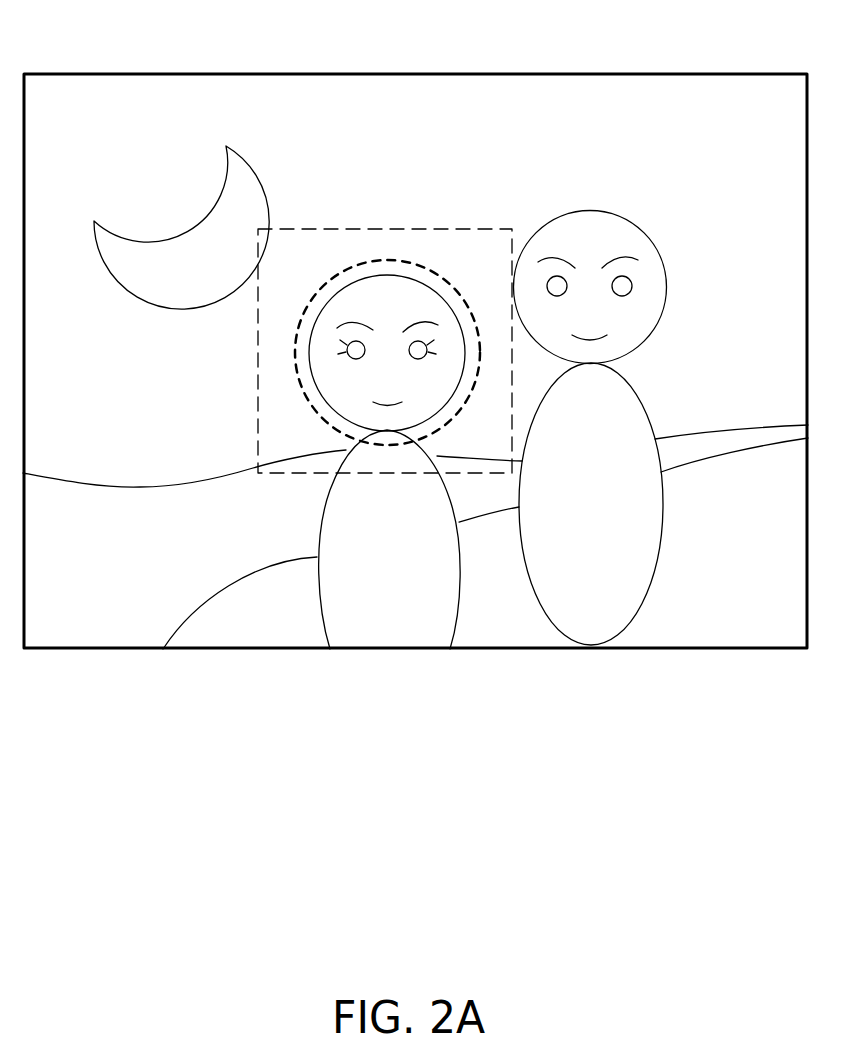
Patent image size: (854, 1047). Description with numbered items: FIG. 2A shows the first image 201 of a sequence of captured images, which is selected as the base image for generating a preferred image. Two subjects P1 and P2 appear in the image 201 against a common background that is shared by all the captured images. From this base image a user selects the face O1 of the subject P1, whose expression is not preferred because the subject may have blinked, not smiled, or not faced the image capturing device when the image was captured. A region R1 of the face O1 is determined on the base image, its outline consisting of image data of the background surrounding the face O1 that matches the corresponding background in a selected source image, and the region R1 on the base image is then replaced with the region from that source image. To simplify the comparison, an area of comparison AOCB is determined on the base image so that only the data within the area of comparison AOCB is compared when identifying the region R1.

The first image 201 is at (603, 72).
The area of comparison AOCB is at (433, 229).
The region R1 is at (378, 259).
The face O1 is at (337, 297).
The subject P1 is at (353, 423).
The subject P2 is at (630, 418).